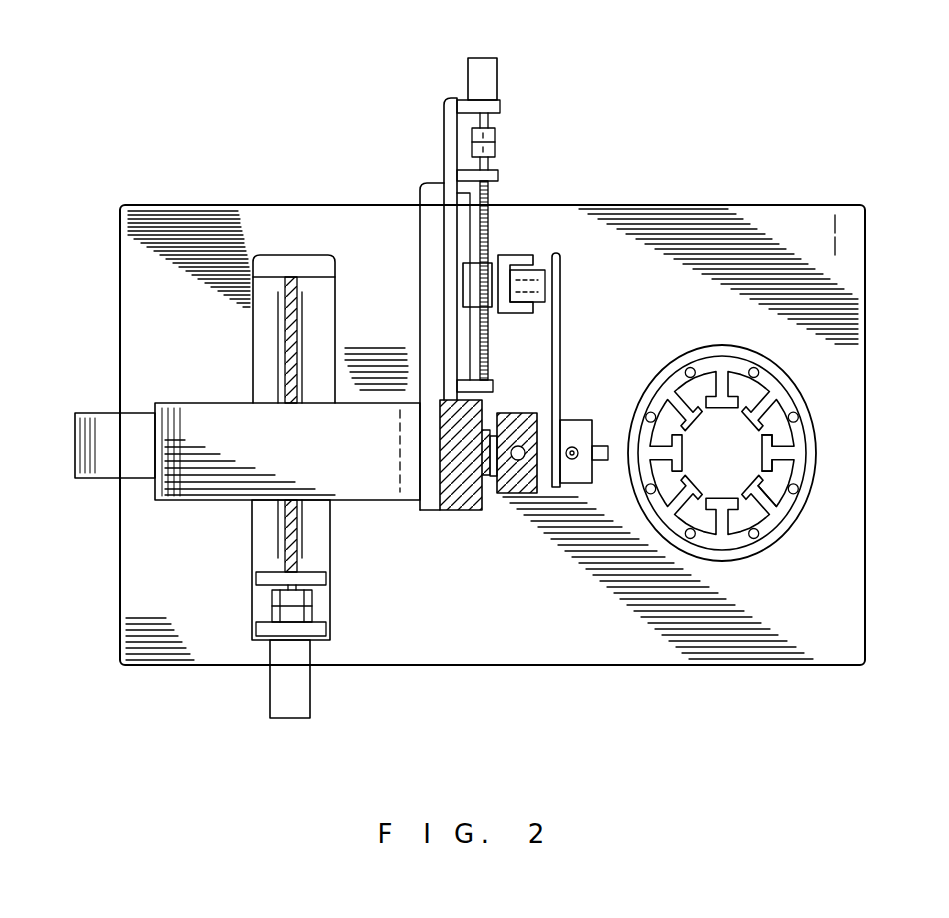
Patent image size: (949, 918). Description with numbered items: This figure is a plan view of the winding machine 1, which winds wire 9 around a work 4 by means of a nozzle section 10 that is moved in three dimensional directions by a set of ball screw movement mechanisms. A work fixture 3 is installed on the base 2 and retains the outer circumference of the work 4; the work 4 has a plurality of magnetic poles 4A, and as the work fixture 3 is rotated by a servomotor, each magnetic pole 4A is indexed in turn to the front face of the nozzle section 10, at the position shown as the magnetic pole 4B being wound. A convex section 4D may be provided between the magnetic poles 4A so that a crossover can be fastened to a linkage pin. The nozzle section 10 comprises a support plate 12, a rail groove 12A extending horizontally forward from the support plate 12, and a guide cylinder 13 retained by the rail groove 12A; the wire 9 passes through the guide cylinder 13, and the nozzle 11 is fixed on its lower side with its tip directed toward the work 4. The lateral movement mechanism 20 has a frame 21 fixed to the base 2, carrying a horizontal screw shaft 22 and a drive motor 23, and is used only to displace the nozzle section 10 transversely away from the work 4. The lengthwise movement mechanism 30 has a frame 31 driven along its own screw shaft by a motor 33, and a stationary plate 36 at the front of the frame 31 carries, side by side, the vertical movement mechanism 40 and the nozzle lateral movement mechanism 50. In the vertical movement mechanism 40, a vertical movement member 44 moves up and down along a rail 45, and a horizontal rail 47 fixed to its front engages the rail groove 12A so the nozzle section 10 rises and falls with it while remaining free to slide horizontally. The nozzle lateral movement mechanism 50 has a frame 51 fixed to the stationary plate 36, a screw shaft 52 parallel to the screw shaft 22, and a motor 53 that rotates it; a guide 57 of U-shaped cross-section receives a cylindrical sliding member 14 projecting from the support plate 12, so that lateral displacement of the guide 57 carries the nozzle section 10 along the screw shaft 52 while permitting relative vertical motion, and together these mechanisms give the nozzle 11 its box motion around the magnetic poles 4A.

The winding machine 1 is at (858, 200).
The base 2 is at (762, 666).
The work fixture 3 is at (752, 346).
The work 4 is at (780, 396).
The magnetic poles 4A is at (770, 500).
The magnetic pole to be wound 4B is at (785, 465).
The convex section 4D is at (795, 440).
The wire 9 is at (518, 459).
The nozzle section 10 is at (592, 382).
The nozzle 11 is at (604, 462).
The support plate 12 is at (565, 268).
The rail groove 12A is at (545, 495).
The guide cylinder 13 is at (580, 490).
The cylindrical sliding member 14 is at (545, 268).
The lateral movement mechanism 20 is at (248, 580).
The frame 21 is at (334, 285).
The screw shaft 22 is at (280, 298).
The drive motor 23 is at (310, 684).
The lengthwise movement mechanism 30 is at (192, 398).
The frame 31 is at (195, 492).
The motor 33 is at (94, 480).
The stationary plate 36 is at (420, 265).
The vertical movement mechanism 40 is at (440, 516).
The vertical movement member 44 is at (518, 500).
The rail 45 is at (490, 482).
The rail 47 is at (572, 462).
The nozzle lateral movement mechanism 50 is at (508, 178).
The frame 51 is at (445, 150).
The screw shaft 52 is at (442, 240).
The motor 53 is at (499, 74).
The guide 57 is at (515, 262).